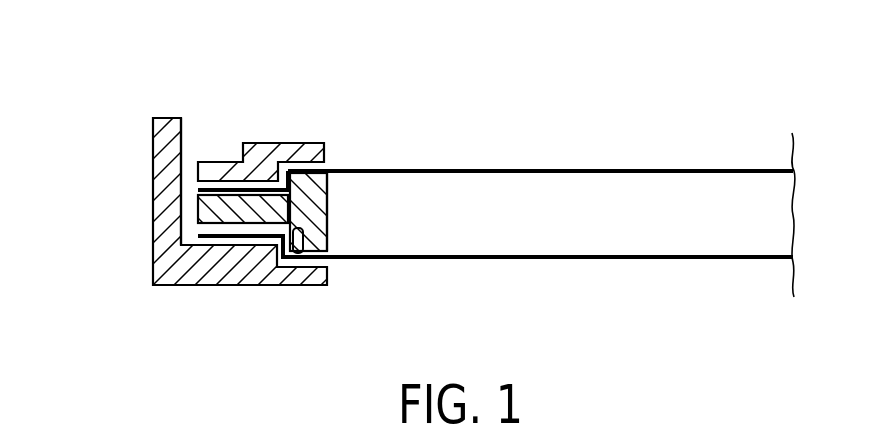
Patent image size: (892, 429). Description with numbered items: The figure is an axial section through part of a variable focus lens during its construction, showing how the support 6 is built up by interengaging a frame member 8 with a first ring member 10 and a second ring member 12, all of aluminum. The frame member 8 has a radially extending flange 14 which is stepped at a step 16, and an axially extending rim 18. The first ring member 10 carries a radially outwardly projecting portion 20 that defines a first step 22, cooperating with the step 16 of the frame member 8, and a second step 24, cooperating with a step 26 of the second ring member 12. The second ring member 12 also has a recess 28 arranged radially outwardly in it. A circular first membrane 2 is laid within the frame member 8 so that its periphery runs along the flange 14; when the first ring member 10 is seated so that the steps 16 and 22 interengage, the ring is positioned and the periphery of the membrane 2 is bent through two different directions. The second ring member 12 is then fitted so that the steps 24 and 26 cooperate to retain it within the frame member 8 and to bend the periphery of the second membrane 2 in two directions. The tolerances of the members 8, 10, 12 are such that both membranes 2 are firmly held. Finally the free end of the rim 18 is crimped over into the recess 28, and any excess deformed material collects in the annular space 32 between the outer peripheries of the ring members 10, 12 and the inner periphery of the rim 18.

The membrane 2 is at (728, 169).
The support 6 is at (116, 128).
The frame member 8 is at (145, 283).
The first ring member 10 is at (342, 234).
The second ring member 12 is at (314, 137).
The radially extending flange 14 is at (320, 270).
The step 16 is at (264, 258).
The axially extending rim 18 is at (162, 173).
The radially outwardly projecting portion 20 is at (205, 205).
The first step 22 is at (303, 244).
The second step 24 is at (328, 195).
The step 26 is at (270, 165).
The recess 28 is at (195, 150).
The annular space 32 is at (190, 238).